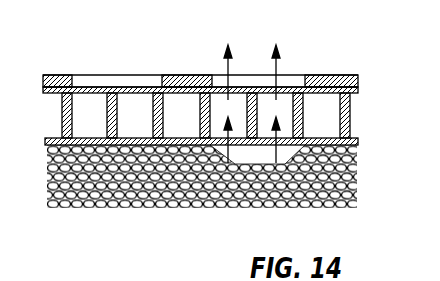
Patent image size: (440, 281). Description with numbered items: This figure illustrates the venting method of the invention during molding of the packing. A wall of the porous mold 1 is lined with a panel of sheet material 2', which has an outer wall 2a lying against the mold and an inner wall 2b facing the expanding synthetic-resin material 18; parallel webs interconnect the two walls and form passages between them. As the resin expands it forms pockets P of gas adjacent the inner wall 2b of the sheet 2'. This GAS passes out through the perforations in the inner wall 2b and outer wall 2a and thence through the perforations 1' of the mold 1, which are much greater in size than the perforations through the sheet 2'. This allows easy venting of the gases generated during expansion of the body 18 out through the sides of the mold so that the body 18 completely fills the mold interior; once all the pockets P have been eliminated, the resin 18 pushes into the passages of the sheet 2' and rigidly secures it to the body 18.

The porous mold 1 is at (57, 56).
The perforations of the mold 1' is at (200, 57).
The panels of sheet material 2' is at (177, 115).
The outer wall 2a is at (358, 90).
The inner wall 2b is at (358, 142).
The synthetic-resin material 18 is at (105, 192).
The gas GAS is at (243, 160).
The pockets of gas P is at (268, 162).